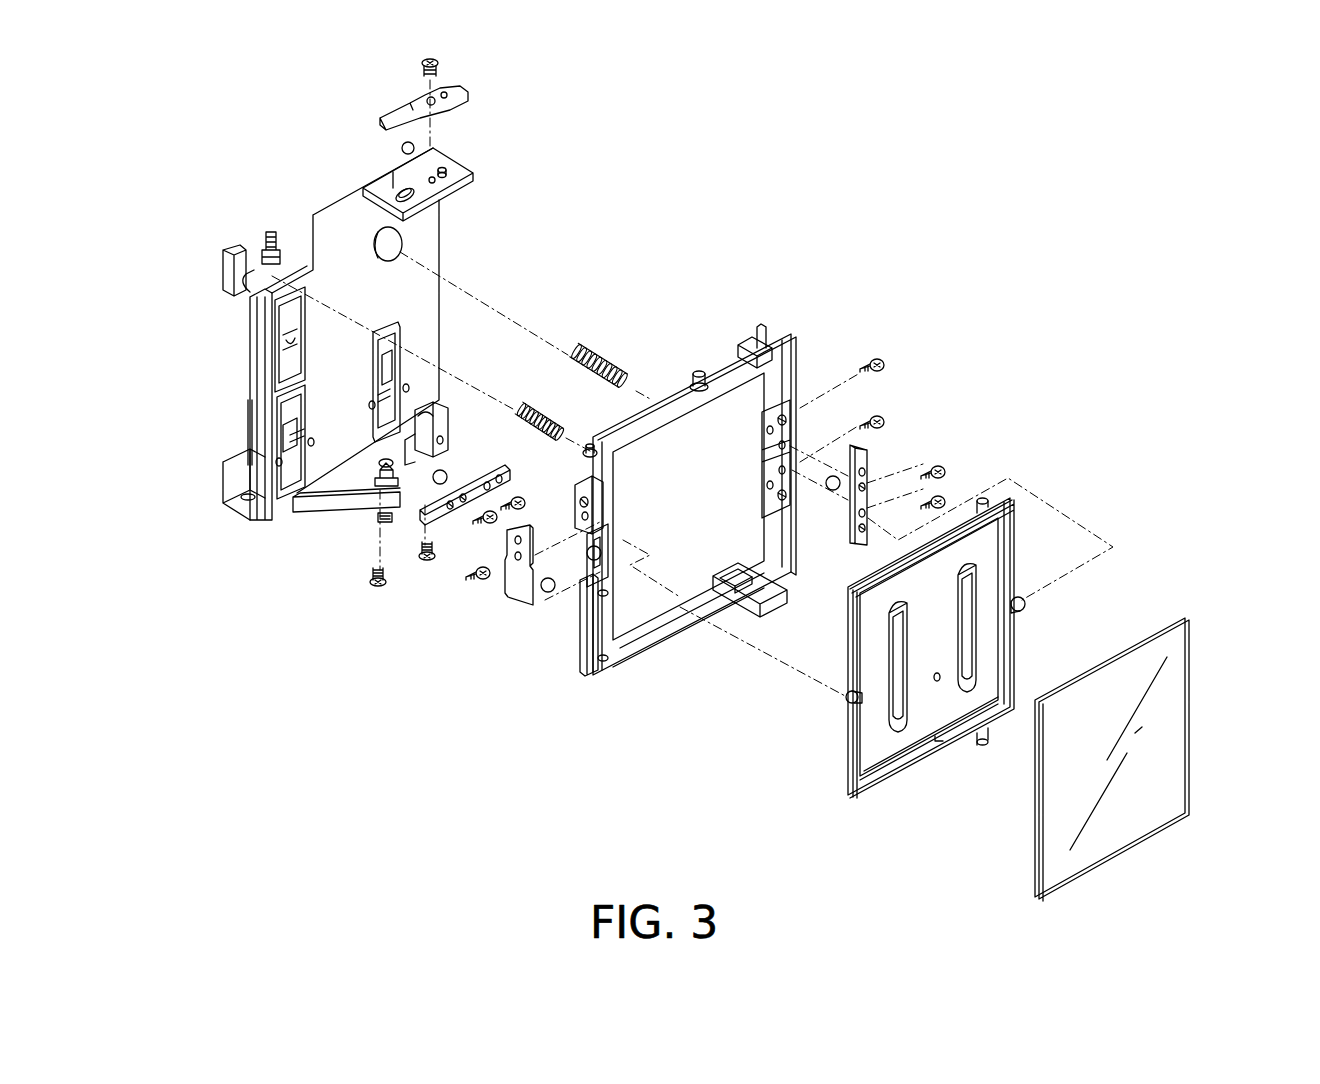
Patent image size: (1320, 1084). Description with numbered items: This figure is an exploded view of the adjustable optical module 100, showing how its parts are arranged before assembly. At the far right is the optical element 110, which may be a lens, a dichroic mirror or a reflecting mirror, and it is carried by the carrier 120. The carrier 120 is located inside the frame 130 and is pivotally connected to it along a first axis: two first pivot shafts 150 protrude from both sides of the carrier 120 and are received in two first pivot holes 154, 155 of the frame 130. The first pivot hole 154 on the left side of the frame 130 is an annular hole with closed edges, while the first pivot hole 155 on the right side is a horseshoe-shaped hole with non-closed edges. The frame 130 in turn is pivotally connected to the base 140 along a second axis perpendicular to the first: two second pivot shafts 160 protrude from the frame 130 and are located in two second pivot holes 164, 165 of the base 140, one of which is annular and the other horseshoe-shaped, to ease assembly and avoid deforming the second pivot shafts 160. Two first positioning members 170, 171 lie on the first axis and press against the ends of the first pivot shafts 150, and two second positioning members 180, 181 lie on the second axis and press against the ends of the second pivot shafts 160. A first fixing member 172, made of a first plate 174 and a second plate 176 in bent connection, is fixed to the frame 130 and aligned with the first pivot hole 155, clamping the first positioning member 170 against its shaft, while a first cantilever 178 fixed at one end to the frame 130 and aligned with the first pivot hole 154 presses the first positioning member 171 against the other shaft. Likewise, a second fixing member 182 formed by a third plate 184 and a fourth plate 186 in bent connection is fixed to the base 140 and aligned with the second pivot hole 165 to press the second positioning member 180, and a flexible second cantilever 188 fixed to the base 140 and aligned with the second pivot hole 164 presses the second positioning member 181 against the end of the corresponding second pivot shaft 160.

The adjustable optical module 100 is at (978, 262).
The optical element 110 is at (1163, 748).
The carrier 120 is at (850, 762).
The frame 130 is at (790, 380).
The base 140 is at (244, 516).
The first pivot shaft 150 is at (1023, 603).
The first pivot hole 154 is at (590, 560).
The first pivot hole 155 is at (768, 458).
The second pivot shaft 160 is at (697, 372).
The second pivot hole 164 is at (403, 190).
The second pivot hole 165 is at (445, 424).
The first positioning member 170 is at (830, 490).
The first positioning member 171 is at (549, 592).
The first fixing member 172 is at (1000, 383).
The first plate 174 is at (866, 460).
The second plate 176 is at (868, 475).
The first cantilever 178 is at (518, 598).
The second positioning member 180 is at (447, 472).
The second positioning member 181 is at (401, 145).
The second fixing member 182 is at (380, 630).
The third plate 184 is at (417, 520).
The fourth plate 186 is at (453, 520).
The second cantilever 188 is at (398, 110).